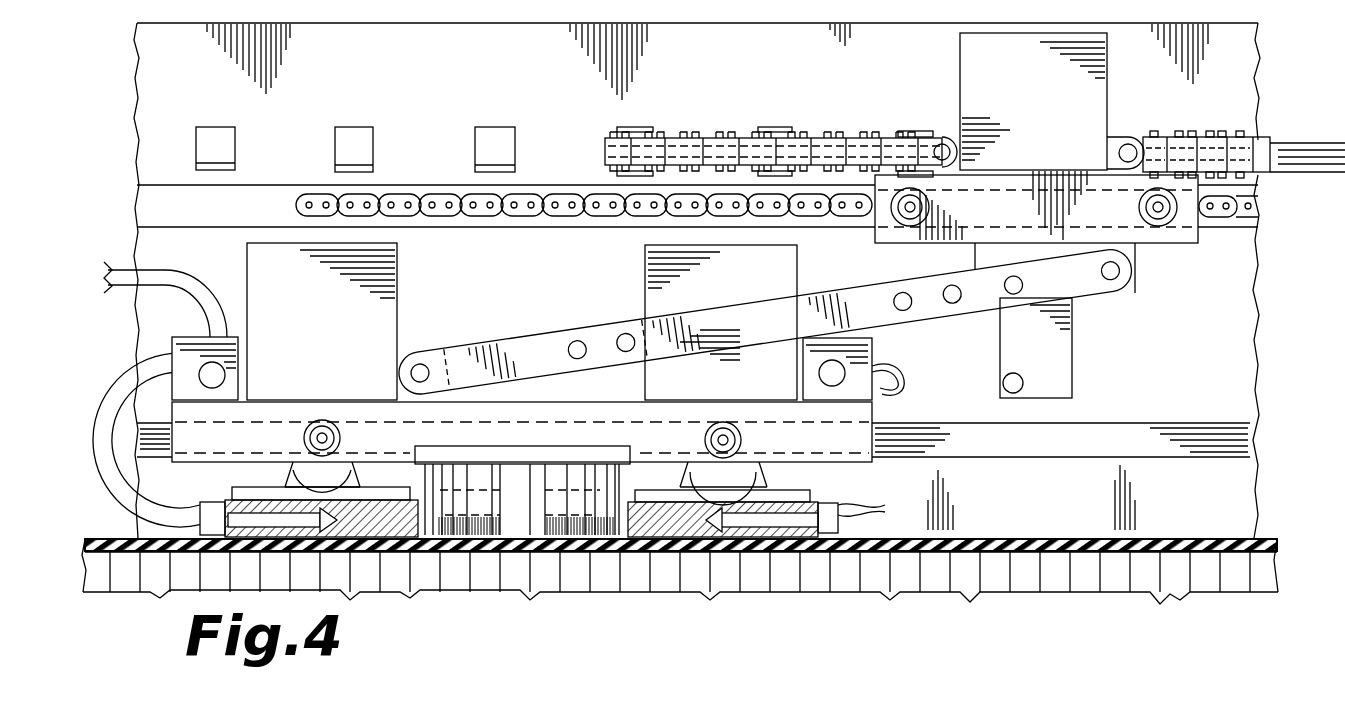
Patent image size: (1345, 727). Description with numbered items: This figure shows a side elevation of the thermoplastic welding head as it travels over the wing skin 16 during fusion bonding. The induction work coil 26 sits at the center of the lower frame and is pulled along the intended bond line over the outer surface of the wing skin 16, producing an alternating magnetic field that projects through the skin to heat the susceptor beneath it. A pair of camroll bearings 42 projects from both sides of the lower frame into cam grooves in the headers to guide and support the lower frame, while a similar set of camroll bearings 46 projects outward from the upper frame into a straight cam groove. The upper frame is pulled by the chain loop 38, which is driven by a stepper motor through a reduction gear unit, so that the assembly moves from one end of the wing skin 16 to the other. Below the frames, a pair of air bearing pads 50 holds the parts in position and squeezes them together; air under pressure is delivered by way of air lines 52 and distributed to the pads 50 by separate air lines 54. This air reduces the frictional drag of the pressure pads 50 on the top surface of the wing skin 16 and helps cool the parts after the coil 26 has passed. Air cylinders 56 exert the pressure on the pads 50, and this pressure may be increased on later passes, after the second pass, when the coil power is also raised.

The thermoplastic wing skin 16 is at (1018, 540).
The induction work coil 26 is at (557, 432).
The chain loop 38 is at (400, 205).
The camroll bearings 42 is at (322, 420).
The camroll bearings 46 is at (930, 186).
The air bearing pads 50 is at (407, 540).
The air lines 52 is at (107, 270).
The air lines 54 is at (104, 399).
The air cylinders 56 is at (345, 300).